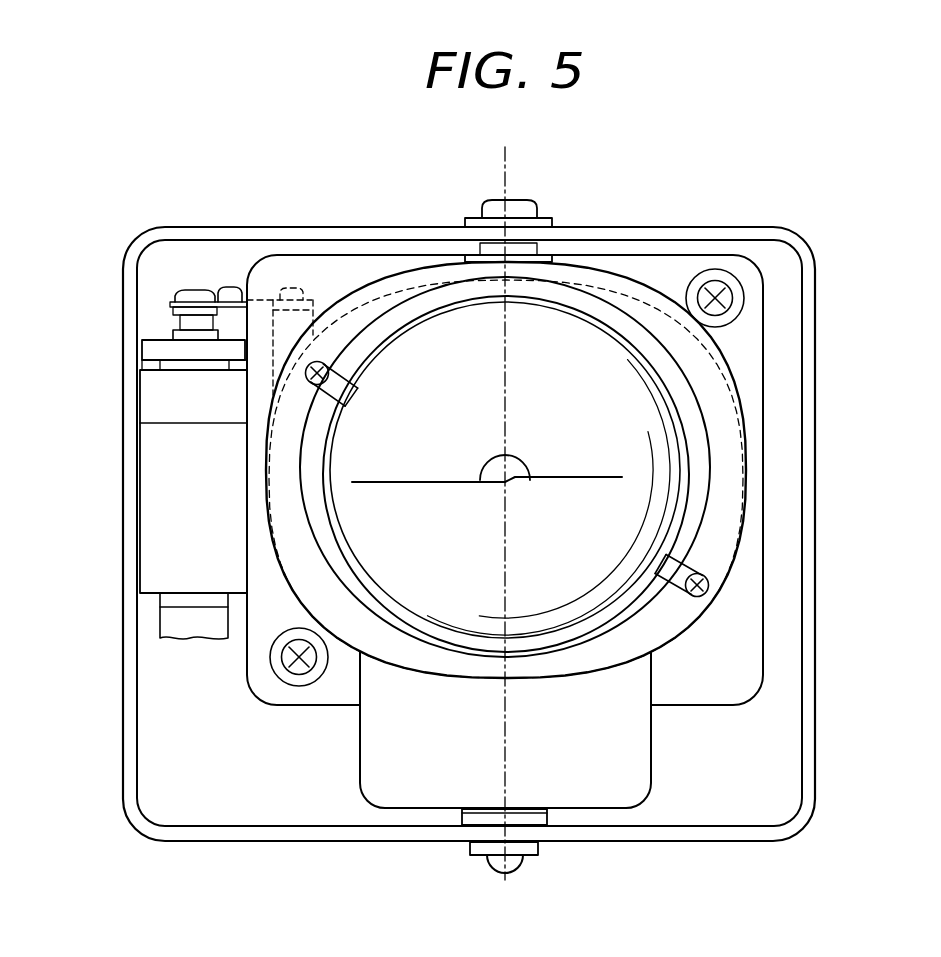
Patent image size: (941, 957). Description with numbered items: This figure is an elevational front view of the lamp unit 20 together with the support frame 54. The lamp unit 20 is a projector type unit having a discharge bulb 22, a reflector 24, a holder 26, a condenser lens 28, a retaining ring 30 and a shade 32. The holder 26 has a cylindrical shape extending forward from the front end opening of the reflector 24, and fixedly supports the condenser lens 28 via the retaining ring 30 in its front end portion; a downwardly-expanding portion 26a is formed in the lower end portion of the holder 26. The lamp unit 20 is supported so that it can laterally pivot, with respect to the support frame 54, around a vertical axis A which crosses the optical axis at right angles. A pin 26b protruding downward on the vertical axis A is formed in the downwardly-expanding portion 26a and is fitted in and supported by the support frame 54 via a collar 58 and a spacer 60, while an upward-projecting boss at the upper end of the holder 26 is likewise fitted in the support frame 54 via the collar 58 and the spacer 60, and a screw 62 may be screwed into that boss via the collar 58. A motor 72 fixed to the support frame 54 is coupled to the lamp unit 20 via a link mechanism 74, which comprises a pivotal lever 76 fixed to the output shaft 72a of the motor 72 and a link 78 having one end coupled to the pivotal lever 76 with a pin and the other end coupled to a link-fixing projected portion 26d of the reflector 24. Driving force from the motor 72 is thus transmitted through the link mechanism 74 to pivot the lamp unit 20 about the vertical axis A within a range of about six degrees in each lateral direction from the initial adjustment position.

The vertical axis A is at (505, 168).
The lamp unit 20 is at (780, 353).
The discharge bulb 22 is at (525, 455).
The reflector 24 is at (680, 248).
The holder 26 is at (743, 417).
The downwardly-expanding portion 26a is at (640, 750).
The pin 26b is at (488, 866).
The link-fixing projected portion 26d is at (313, 332).
The condenser lens 28 is at (690, 516).
The retaining ring 30 is at (632, 617).
The shade 32 is at (453, 481).
The support frame 54 is at (817, 273).
The collar 58 is at (552, 227).
The spacer 60 is at (552, 259).
The screw 62 is at (527, 208).
The motor 72 is at (162, 404).
The output shaft 72a is at (186, 328).
The link mechanism 74 is at (228, 277).
The pivotal lever 76 is at (172, 301).
The link 78 is at (273, 300).